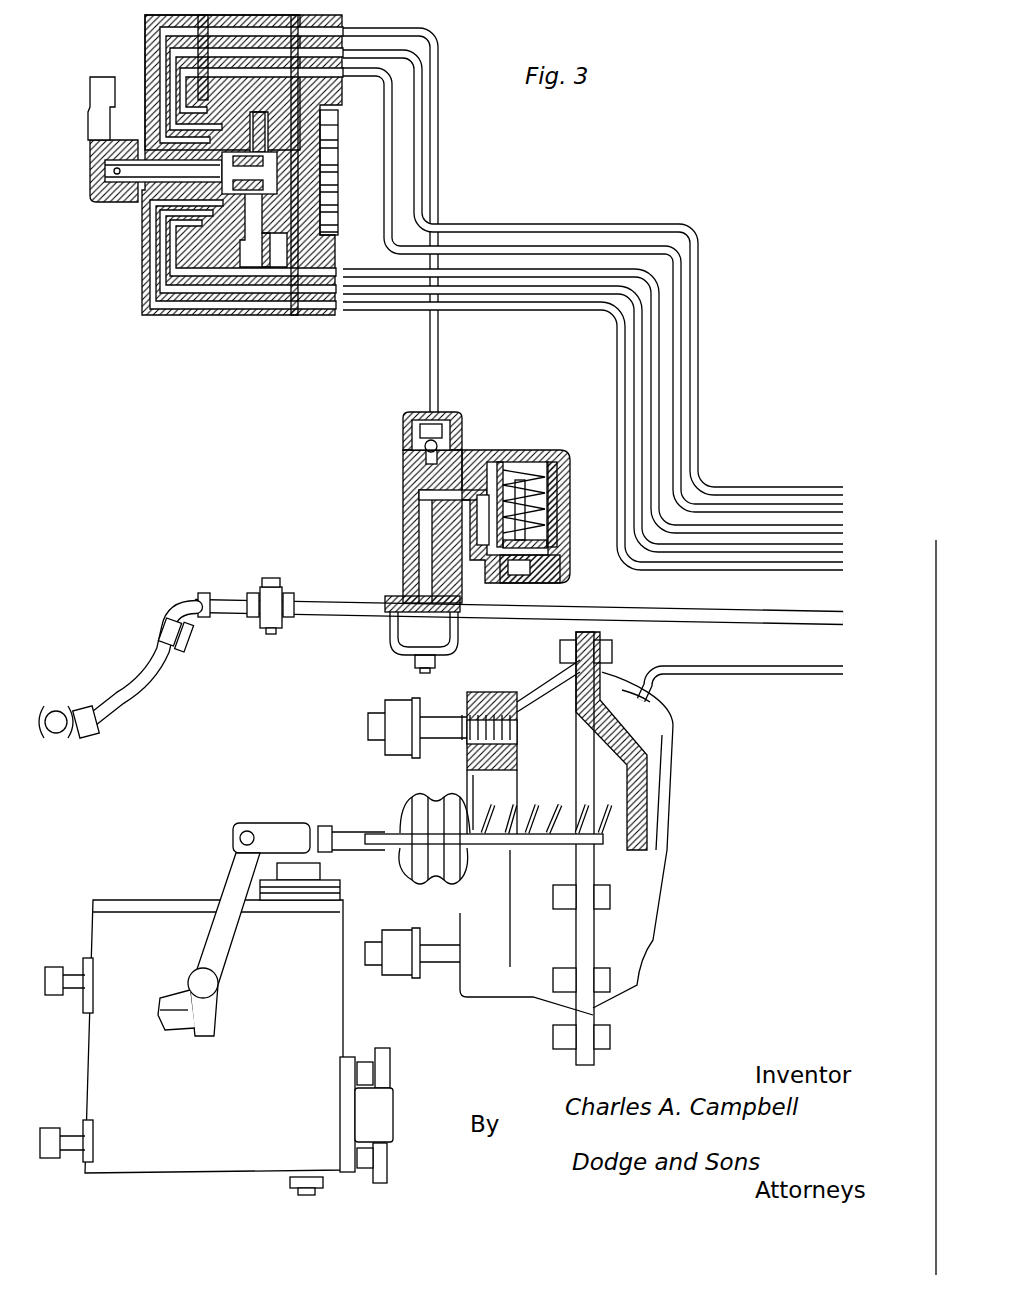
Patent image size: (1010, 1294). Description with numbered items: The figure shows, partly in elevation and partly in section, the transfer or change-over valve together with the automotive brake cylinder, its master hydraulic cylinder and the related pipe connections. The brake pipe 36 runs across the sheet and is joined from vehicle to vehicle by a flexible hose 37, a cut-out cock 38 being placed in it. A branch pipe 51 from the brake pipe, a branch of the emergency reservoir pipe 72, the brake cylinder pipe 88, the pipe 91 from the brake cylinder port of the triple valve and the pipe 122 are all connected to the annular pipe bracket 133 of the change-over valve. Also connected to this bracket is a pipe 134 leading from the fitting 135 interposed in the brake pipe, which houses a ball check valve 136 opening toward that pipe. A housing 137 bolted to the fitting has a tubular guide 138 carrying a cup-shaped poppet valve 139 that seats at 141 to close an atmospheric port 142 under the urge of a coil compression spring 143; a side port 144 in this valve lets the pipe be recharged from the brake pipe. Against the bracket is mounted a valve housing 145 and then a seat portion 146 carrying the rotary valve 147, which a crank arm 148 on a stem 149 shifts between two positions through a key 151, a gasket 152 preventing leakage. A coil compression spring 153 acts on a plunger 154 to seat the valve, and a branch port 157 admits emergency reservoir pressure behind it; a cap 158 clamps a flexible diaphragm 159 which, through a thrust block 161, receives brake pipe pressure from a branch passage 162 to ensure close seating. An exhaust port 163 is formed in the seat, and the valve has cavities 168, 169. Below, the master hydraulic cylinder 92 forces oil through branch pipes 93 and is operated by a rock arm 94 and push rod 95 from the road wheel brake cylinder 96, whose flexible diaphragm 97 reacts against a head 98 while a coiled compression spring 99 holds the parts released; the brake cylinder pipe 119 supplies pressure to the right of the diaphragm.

The brake pipe 36 is at (724, 615).
The flexible hose 37 is at (130, 667).
The cut-out cock 38 is at (282, 616).
The branch pipe 51 is at (383, 272).
The emergency reservoir pipe 72 is at (344, 311).
The brake cylinder pipe 88 is at (357, 74).
The pipe 91 is at (368, 50).
The master hydraulic cylinder 92 is at (145, 920).
The branch pipes 93 is at (390, 1052).
The rock arm 94 is at (226, 878).
The push rod 95 is at (352, 833).
The road wheel brake cylinder 96 is at (660, 874).
The flexible diaphragm 97 is at (652, 750).
The head 98 is at (620, 768).
The coiled compression spring 99 is at (538, 803).
The brake cylinder pipe 119 is at (778, 672).
The pipe 122 is at (372, 295).
The annular pipe bracket 133 is at (294, 316).
The pipe 134 is at (441, 96).
The fitting 135 is at (402, 545).
The ball check valve 136 is at (403, 452).
The housing 137 is at (482, 452).
The tubular guide 138 is at (560, 505).
The cup-shaped poppet valve 139 is at (558, 534).
The seat 141 is at (528, 570).
The atmospheric port 142 is at (515, 578).
The coil compression spring 143 is at (526, 466).
The side port 144 is at (483, 530).
The valve housing 145 is at (205, 300).
The seat portion 146 is at (152, 314).
The rotary valve 147 is at (228, 318).
The crank arm 148 is at (100, 76).
The stem 149 is at (130, 207).
The key 151 is at (325, 230).
The gasket 152 is at (205, 40).
The coil compression spring 153 is at (325, 132).
The plunger 154 is at (325, 160).
The branch port 157 is at (245, 300).
The cap 158 is at (325, 175).
The flexible diaphragm 159 is at (325, 190).
The thrust block 161 is at (322, 146).
The branch passage 162 is at (325, 212).
The exhaust port 163 is at (150, 38).
The cavity 168 is at (214, 162).
The cavity 169 is at (165, 238).